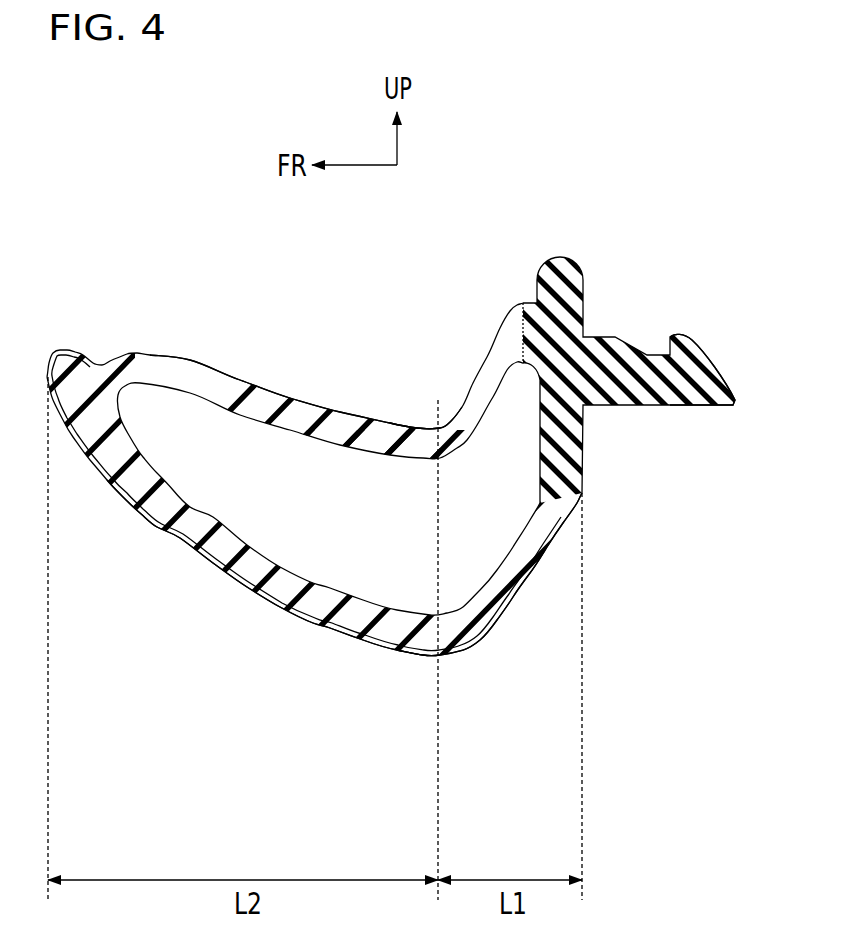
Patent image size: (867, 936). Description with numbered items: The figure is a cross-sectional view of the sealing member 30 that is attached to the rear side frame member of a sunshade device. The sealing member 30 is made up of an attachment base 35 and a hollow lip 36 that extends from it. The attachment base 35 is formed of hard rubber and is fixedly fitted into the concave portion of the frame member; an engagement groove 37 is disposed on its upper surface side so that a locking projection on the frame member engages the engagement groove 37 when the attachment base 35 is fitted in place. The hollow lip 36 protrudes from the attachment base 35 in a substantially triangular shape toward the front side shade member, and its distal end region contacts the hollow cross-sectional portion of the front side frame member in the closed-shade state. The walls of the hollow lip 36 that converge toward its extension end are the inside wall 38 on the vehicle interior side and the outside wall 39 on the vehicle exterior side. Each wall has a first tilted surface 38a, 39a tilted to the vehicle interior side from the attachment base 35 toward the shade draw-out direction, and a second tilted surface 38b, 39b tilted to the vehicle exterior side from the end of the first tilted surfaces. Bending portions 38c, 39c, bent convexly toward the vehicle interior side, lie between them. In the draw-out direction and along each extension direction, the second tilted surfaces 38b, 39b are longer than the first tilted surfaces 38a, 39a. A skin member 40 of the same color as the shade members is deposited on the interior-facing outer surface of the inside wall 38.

The sealing member 30 is at (489, 220).
The attachment base 35 is at (625, 331).
The hollow lip 36 is at (119, 347).
The engagement groove 37 is at (657, 353).
The inside wall 38 is at (160, 507).
The first tilted surface 38a is at (527, 597).
The second tilted surface 38b is at (245, 590).
The bending portion 38c is at (438, 658).
The outside wall 39 is at (190, 380).
The first tilted surface 39a is at (470, 383).
The second tilted surface 39b is at (313, 405).
The bending portion 39c is at (427, 427).
The skin member 40 is at (310, 620).